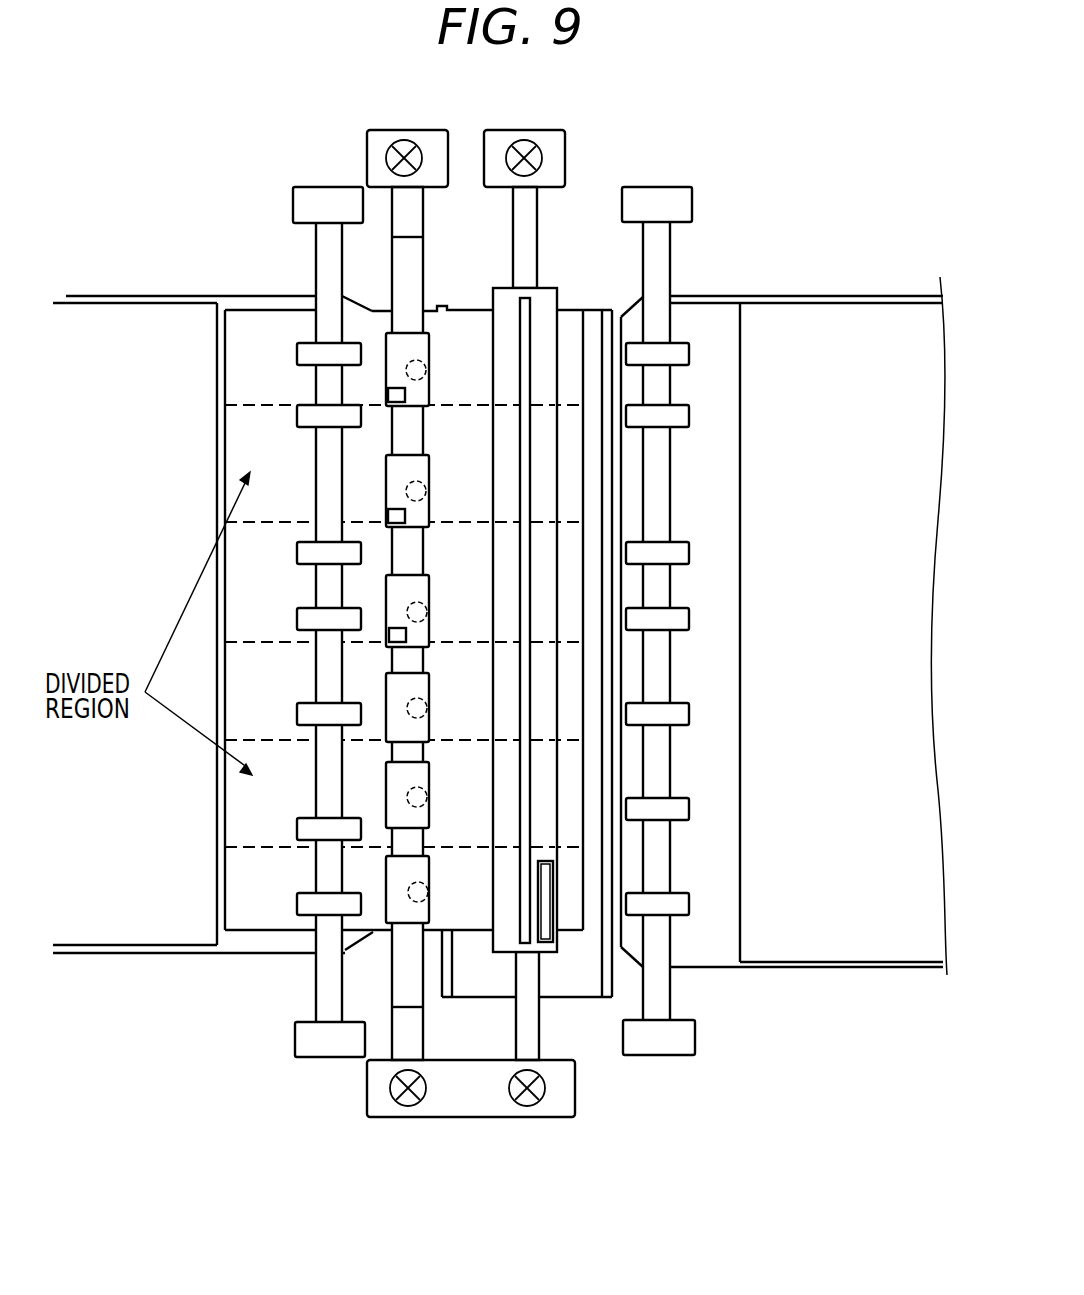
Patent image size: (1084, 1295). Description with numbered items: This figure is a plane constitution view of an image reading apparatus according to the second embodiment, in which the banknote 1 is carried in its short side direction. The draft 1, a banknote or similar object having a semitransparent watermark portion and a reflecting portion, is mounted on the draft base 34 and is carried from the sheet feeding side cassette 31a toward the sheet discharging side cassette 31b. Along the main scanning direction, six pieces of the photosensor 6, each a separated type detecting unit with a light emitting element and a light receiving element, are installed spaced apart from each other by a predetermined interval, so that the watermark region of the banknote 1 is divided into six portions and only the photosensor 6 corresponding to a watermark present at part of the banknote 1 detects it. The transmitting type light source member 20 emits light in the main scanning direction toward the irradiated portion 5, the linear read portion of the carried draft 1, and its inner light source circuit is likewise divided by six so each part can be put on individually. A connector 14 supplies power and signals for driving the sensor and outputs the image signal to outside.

The draft 1 is at (223, 893).
The irradiated portion 5 is at (530, 402).
The detecting unit 6 is at (387, 893).
The connector 14 is at (548, 933).
The transmitting type light source member 20 is at (552, 810).
The sheet feeding side cassette 31a is at (173, 323).
The sheet discharging side cassette 31b is at (810, 318).
The draft base 34 is at (123, 295).